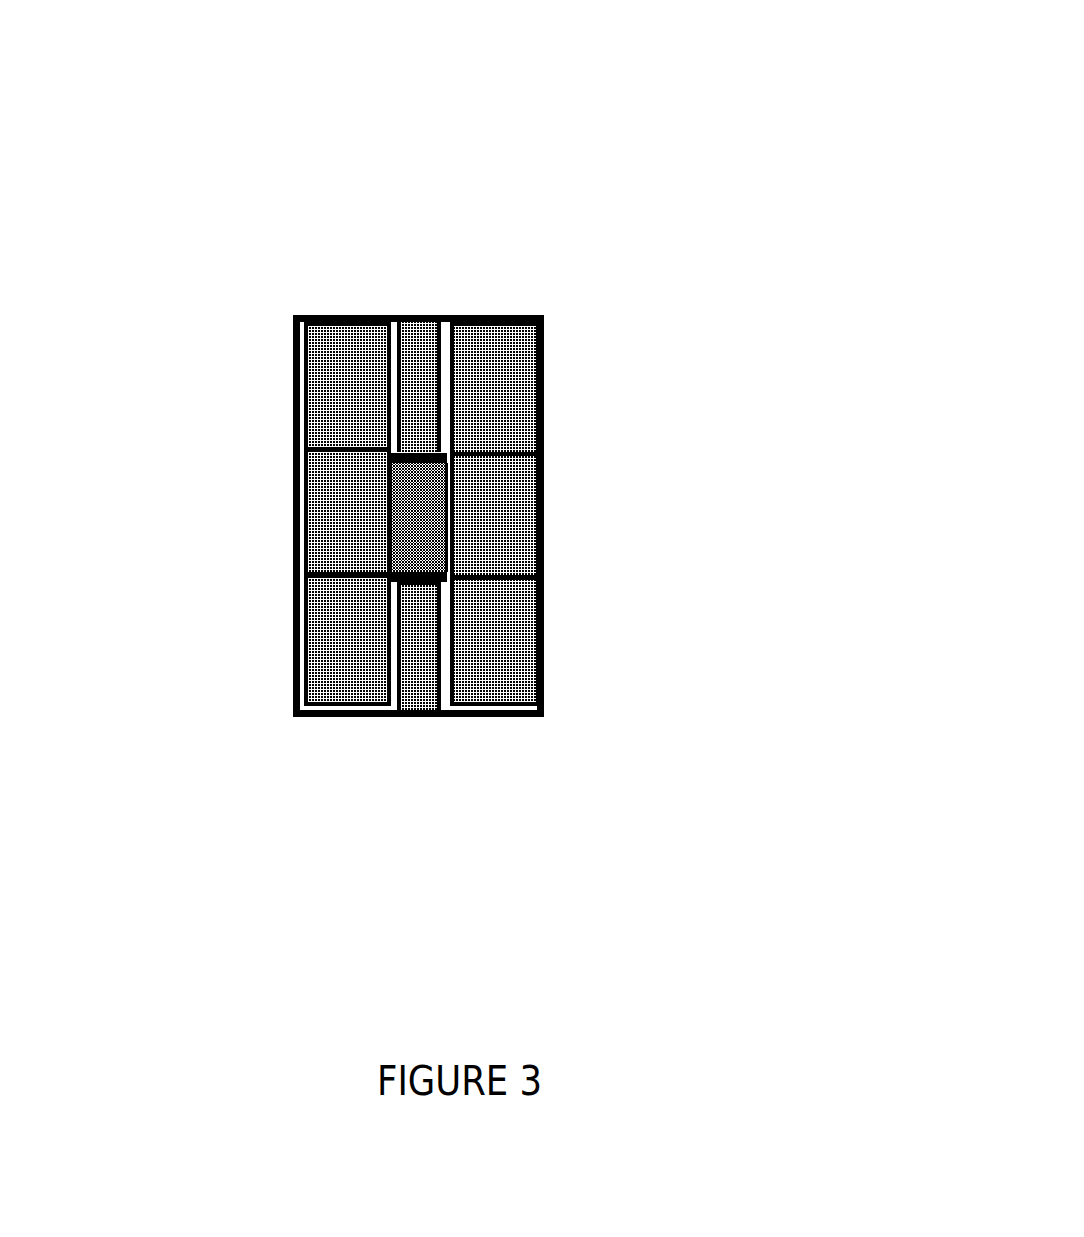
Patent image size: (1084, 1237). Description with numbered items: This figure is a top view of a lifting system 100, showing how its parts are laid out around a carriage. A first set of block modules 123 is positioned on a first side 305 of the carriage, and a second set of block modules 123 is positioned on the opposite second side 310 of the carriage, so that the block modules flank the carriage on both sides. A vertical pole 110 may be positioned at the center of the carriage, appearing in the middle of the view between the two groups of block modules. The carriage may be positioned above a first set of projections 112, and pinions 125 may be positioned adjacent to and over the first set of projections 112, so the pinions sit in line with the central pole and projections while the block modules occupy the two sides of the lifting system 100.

The lifting system 100 is at (347, 70).
The vertical pole 110 is at (420, 530).
The first set of projections 112 is at (423, 456).
The block modules 123 is at (505, 518).
The pinions 125 is at (412, 322).
The first side 305 is at (538, 408).
The second side 310 is at (287, 387).